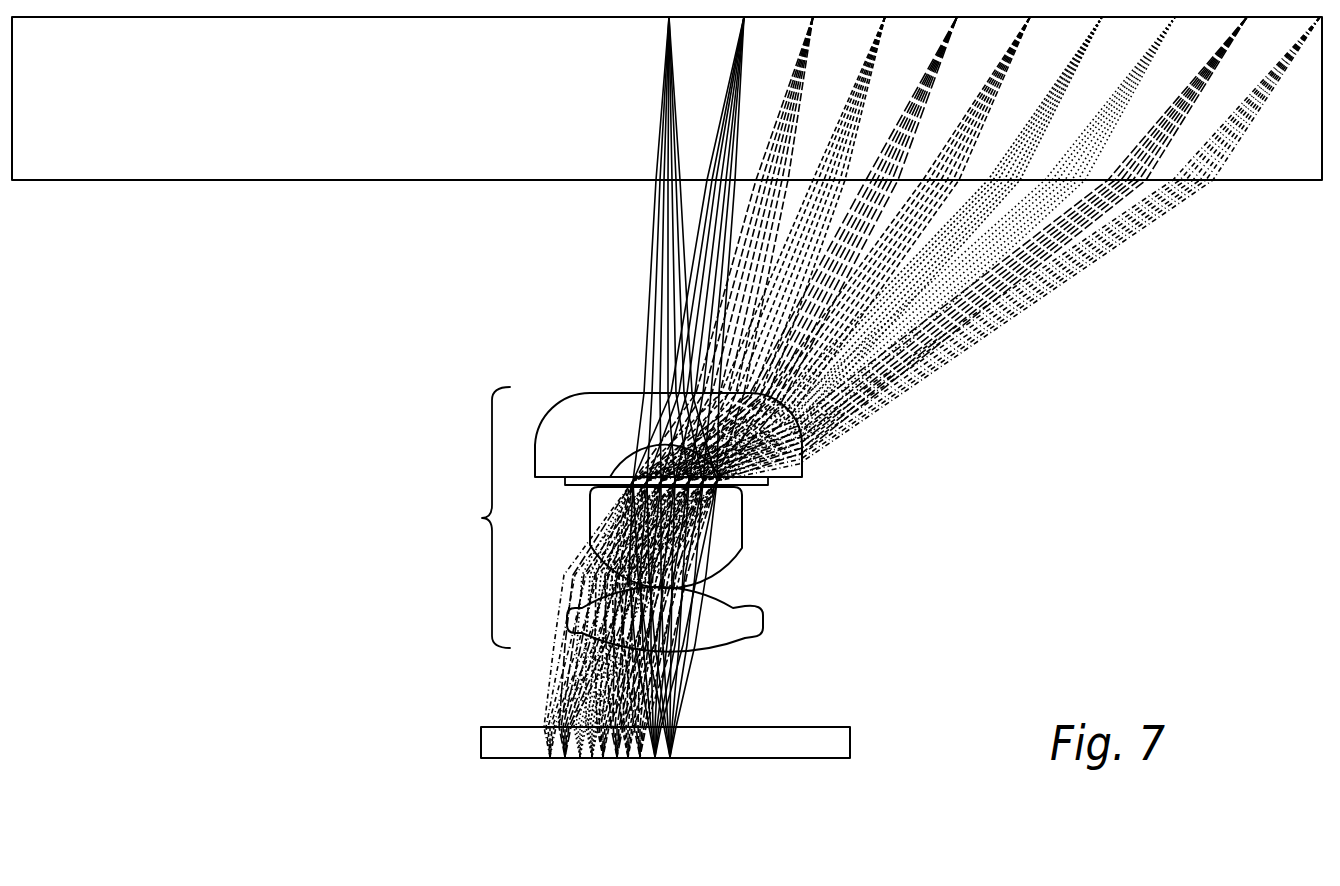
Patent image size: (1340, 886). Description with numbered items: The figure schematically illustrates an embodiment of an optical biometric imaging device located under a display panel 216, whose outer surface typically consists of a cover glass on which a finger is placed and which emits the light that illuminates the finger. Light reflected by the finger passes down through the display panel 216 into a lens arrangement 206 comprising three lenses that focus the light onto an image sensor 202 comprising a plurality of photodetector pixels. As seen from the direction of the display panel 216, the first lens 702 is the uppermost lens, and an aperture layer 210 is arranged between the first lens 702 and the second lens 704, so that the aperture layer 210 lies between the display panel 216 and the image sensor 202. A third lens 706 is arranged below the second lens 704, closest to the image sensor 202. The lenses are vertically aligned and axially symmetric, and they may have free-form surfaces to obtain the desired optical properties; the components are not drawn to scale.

The display panel 216 is at (336, 150).
The lens arrangement 206 is at (469, 517).
The first lens 702 is at (802, 445).
The aperture layer 210 is at (772, 482).
The second lens 704 is at (747, 532).
The third lens element 706 is at (763, 622).
The image sensor 202 is at (850, 738).